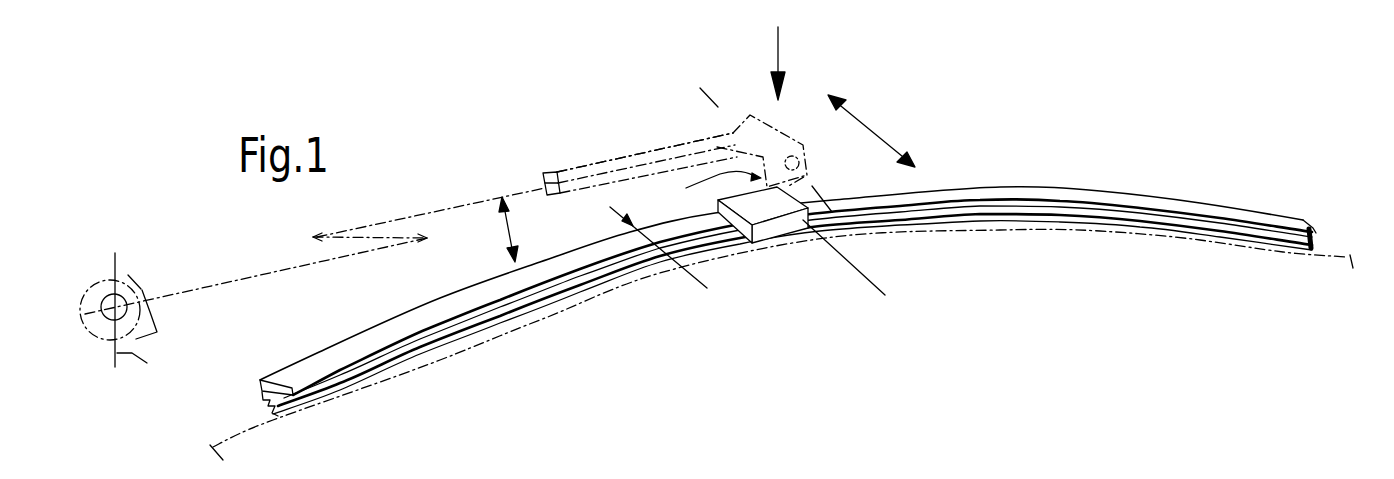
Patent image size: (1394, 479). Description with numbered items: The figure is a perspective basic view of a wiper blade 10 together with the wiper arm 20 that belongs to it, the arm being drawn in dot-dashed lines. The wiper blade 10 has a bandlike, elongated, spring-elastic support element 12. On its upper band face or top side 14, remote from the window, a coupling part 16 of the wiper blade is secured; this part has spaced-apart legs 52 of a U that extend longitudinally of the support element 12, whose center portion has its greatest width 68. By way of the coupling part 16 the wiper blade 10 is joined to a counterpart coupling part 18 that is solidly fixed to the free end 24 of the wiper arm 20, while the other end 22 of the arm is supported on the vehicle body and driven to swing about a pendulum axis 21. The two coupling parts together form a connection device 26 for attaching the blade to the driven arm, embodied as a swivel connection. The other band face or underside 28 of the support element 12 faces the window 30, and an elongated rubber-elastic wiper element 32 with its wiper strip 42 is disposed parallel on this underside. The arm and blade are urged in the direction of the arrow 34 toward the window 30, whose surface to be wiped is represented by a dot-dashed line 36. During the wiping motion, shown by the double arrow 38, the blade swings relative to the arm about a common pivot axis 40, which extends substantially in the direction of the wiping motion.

The wiper blade 10 is at (959, 168).
The support element 12 is at (445, 288).
The top side 14 is at (313, 362).
The coupling part 16 is at (664, 212).
The counterpart coupling part 18 is at (794, 133).
The wiper arm 20 is at (480, 122).
The pendulum axis 21 is at (120, 354).
The end of the wiper arm 22 is at (133, 283).
The free end of the wiper arm 24 is at (712, 130).
The connection device 26 is at (710, 189).
The underside 28 is at (1312, 230).
The window 30 is at (290, 414).
The wiper element 32 is at (256, 400).
The arrow 34 is at (815, 32).
The dot-dashed line 36 is at (247, 428).
The double arrow 38 is at (870, 122).
The pivot axis 40 is at (722, 112).
The wiper strip 42 is at (1103, 222).
The leg of the U 52 is at (775, 237).
The greatest width 68 is at (548, 226).